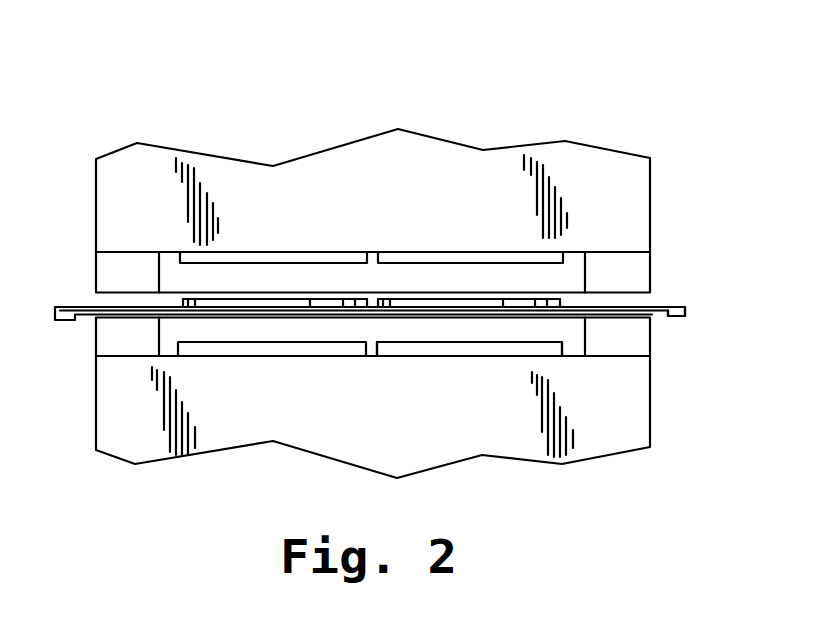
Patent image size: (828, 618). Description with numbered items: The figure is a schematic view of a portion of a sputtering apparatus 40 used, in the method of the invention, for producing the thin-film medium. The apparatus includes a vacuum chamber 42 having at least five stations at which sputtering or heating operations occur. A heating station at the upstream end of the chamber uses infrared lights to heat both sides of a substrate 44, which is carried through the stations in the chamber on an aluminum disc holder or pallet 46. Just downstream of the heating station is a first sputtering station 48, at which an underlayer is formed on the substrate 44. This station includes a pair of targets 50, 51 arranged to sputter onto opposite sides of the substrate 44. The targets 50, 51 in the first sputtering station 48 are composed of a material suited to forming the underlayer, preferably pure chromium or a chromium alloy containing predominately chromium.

The sputtering apparatus 40 is at (451, 129).
The vacuum chamber 42 is at (664, 282).
The substrate 44 is at (478, 300).
The pallet 46 is at (658, 313).
The first sputtering station 48 is at (459, 338).
The target 50 is at (518, 350).
The target 51 is at (418, 257).